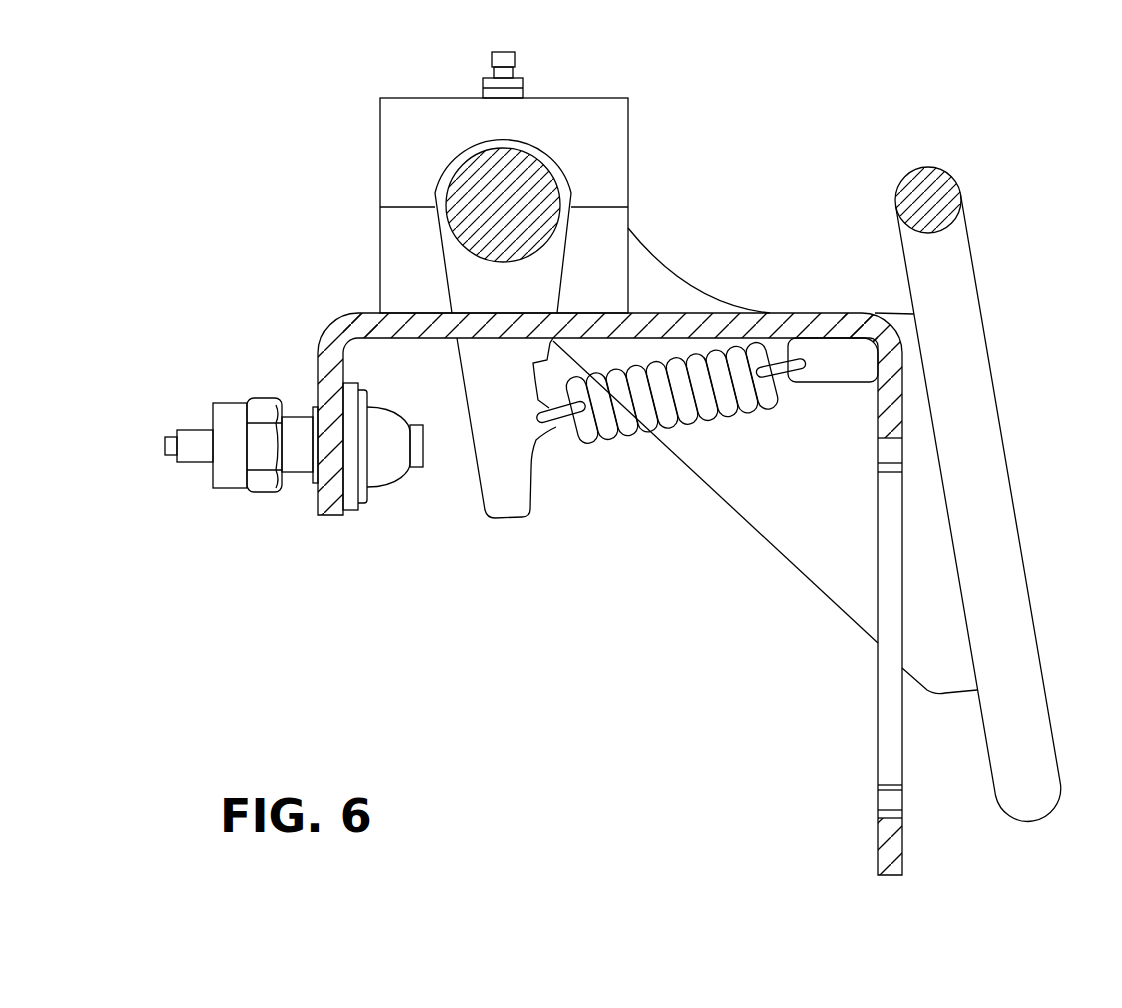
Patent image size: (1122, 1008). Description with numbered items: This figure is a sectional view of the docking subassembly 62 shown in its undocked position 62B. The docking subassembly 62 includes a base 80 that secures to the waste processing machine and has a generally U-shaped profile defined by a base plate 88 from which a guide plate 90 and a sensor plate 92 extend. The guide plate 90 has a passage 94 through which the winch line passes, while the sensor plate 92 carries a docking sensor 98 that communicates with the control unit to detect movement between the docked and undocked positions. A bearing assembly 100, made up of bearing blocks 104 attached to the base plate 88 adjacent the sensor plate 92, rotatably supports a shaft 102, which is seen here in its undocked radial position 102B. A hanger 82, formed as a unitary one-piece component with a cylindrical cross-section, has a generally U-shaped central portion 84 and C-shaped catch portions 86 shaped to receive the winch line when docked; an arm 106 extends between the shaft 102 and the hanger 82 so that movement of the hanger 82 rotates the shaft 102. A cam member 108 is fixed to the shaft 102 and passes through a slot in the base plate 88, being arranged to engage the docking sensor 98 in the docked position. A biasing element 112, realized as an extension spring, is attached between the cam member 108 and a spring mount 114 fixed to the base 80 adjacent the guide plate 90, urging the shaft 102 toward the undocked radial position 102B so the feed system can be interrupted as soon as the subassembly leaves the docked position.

The docking subassembly 62 is at (212, 190).
The undocked position 62B is at (635, 459).
The base 80 is at (840, 308).
The hanger 82 is at (931, 165).
The central portion 84 is at (932, 198).
The catch portion 86 is at (1036, 775).
The base plate 88 is at (686, 318).
The guide plate 90 is at (888, 850).
The sensor plate 92 is at (330, 355).
The passage 94 is at (888, 758).
The docking sensor 98 is at (243, 398).
The bearing assembly 100 is at (587, 108).
The shaft 102 is at (470, 192).
The undocked radial position 102B is at (503, 205).
The bearing block 104 is at (612, 145).
The arm 106 is at (838, 515).
The cam member 108 is at (516, 409).
The biasing element 112 is at (595, 450).
The spring mount 114 is at (858, 369).